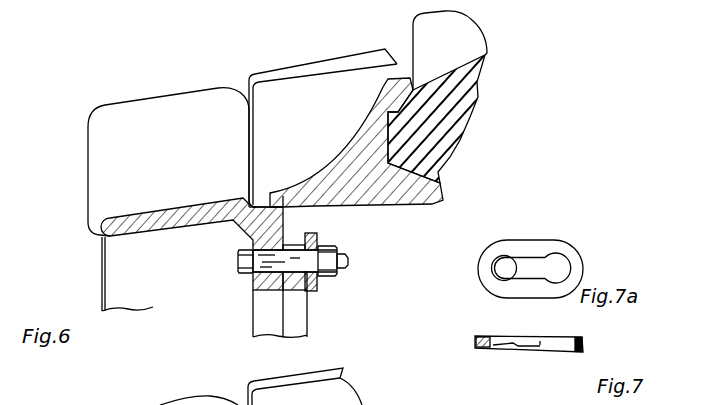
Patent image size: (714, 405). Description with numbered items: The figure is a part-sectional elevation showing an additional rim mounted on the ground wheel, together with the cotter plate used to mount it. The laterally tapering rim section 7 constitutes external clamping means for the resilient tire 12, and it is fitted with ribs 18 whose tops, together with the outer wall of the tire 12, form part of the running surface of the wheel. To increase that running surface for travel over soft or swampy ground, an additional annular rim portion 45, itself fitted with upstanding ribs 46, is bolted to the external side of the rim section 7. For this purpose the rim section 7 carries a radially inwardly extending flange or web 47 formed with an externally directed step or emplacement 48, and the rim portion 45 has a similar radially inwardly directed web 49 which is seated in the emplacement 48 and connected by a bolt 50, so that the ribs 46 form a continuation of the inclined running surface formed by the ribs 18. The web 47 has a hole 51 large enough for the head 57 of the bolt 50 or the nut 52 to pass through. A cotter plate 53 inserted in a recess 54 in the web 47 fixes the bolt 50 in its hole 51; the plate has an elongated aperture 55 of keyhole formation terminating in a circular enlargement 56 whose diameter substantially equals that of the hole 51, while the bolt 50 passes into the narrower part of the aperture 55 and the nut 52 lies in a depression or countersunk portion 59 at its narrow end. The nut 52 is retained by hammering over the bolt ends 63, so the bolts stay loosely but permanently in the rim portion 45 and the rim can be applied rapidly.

In FIG. 6, the upstanding ribs 46 is at (149, 173).
In FIG. 6, the additional annular rim portion 45 is at (220, 222).
In FIG. 6, the radially inwardly extending flange or web 47 is at (288, 287).
In FIG. 6, the ribs 18 is at (294, 124).
In FIG. 6, the rim section 7 is at (377, 183).
In FIG. 6, the tire 12 is at (437, 117).
In FIG. 6, the step or emplacement 48 is at (283, 205).
In FIG. 6, the recess 54 is at (284, 193).
In FIG. 6, the bolt head 57 is at (240, 266).
In FIG. 6, the bolt 50 is at (240, 276).
In FIG. 6, the radially inwardly directed flange or web 49 is at (255, 280).
In FIG. 6, the hole 51 is at (318, 241).
In FIG. 6, the cotter plate 53 is at (318, 283).
In FIG. 7A, the cotter plate 53 is at (530, 238).
In FIG. 6, the nut 52 is at (330, 276).
In FIG. 6, the bolt ends 63 is at (349, 261).
In FIG. 7A, the circular enlargement 56 is at (560, 263).
In FIG. 7A, the elongated aperture 55 is at (523, 270).
In FIG. 7, the depression or countersunk portion 59 is at (492, 350).